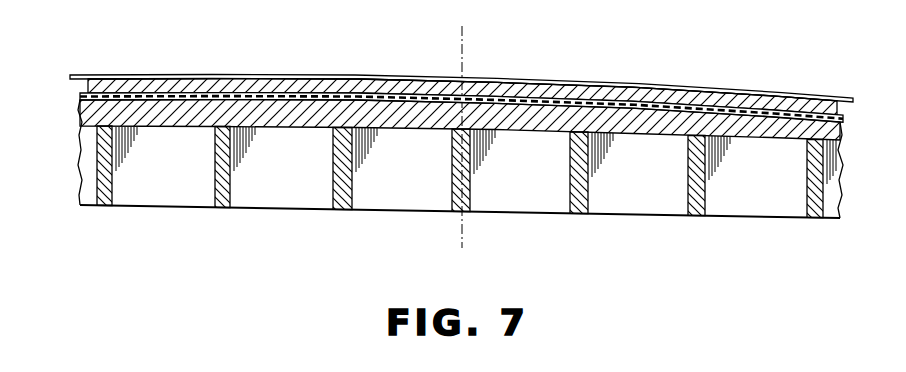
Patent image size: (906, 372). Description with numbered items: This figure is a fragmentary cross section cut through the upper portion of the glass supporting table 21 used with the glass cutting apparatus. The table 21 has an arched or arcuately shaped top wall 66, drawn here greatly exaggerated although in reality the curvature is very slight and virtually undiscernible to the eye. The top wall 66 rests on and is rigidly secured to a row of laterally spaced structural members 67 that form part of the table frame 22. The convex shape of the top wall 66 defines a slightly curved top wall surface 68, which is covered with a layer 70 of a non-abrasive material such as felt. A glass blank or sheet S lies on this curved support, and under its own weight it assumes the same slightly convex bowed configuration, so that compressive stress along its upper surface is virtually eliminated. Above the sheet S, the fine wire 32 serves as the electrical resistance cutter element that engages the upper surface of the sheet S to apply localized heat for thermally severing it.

The glass supporting table 21 is at (90, 232).
The frame 22 is at (194, 213).
The fine wire 32 is at (845, 97).
The top wall 66 is at (155, 108).
The structural members 67 is at (337, 192).
The top wall surface 68 is at (262, 98).
The layer of non-abrasive material 70 is at (317, 92).
The glass blank or sheet S is at (588, 90).